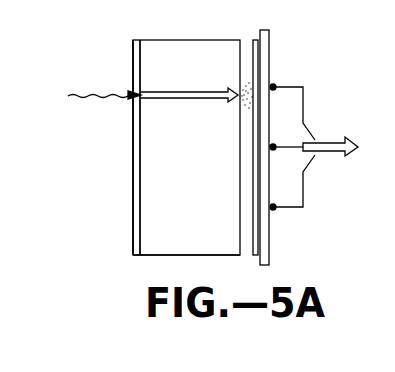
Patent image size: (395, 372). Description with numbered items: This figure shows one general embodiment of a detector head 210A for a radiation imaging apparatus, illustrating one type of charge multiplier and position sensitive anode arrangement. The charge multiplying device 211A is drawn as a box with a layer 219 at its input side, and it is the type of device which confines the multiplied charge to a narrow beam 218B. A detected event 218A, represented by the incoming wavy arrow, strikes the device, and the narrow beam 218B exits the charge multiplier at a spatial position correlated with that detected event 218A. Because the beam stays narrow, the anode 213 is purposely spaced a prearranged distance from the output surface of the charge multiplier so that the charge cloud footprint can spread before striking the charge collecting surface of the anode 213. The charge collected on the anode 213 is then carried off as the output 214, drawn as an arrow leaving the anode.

The image intensifier / converter assembly 210A is at (214, 20).
The charge multiplying device 211A is at (162, 53).
The anode 213 is at (269, 48).
The output signal 214 is at (318, 138).
The detected event 218A is at (122, 68).
The narrow beam 218B is at (215, 92).
The substrate 219 is at (138, 188).